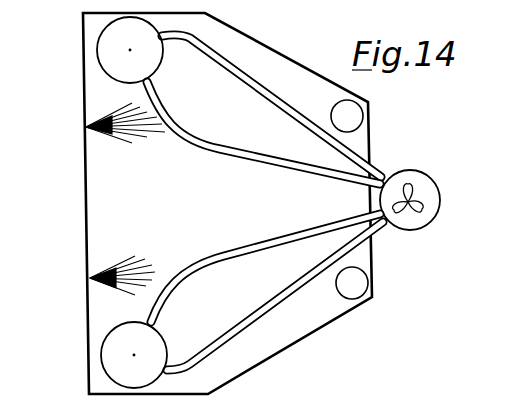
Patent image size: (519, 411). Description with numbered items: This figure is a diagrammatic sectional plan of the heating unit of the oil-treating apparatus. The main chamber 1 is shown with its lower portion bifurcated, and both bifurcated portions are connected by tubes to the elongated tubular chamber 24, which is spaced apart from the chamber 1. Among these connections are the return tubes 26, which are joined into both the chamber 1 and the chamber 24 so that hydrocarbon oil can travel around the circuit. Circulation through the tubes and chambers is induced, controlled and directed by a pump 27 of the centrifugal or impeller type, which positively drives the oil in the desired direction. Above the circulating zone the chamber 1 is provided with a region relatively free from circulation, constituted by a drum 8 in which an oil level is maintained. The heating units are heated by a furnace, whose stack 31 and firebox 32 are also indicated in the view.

The chamber 1 is at (110, 45).
The drum 8 is at (95, 170).
The elongated tubular chamber 24 is at (441, 208).
The return tubes 26 is at (278, 313).
The pump 27 is at (409, 186).
The stack 31 is at (368, 123).
The firebox 32 is at (84, 127).